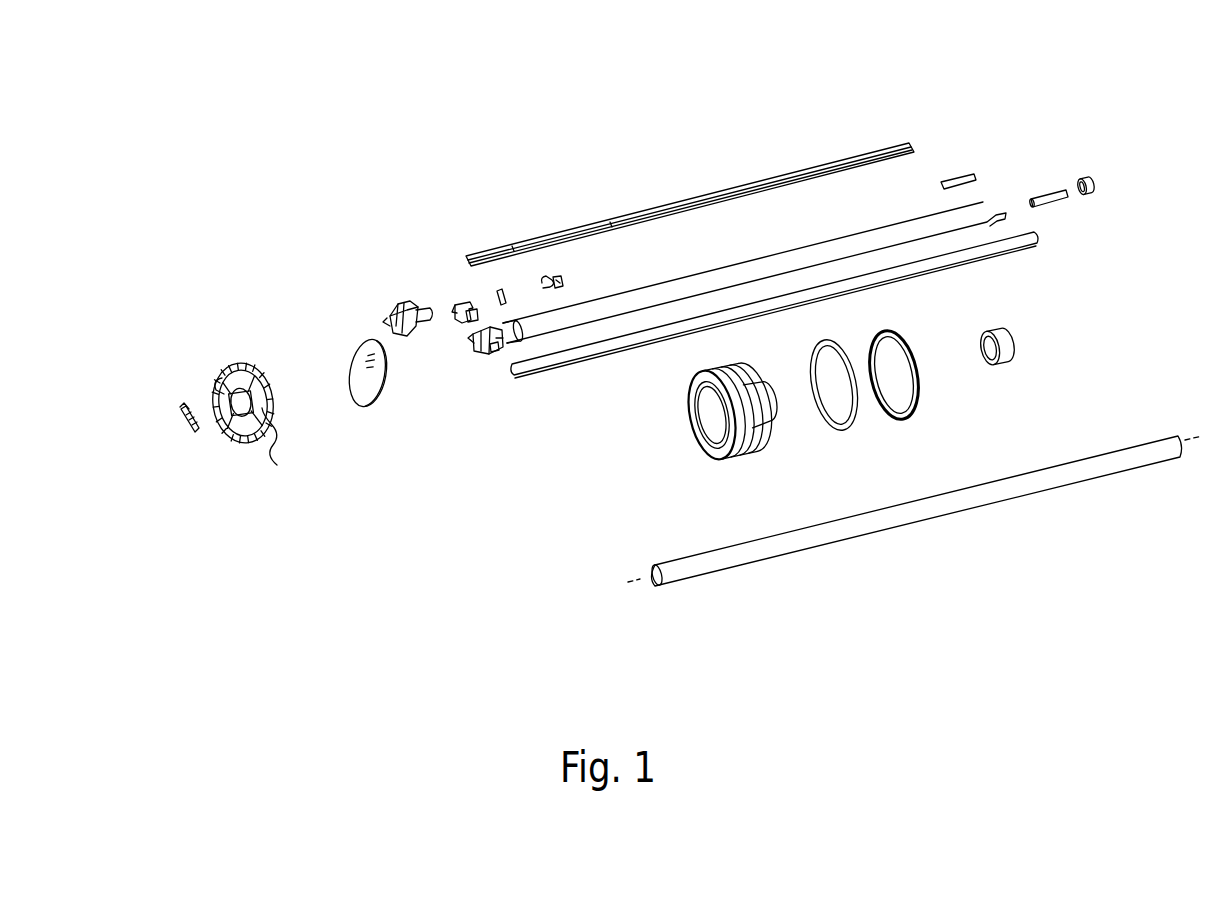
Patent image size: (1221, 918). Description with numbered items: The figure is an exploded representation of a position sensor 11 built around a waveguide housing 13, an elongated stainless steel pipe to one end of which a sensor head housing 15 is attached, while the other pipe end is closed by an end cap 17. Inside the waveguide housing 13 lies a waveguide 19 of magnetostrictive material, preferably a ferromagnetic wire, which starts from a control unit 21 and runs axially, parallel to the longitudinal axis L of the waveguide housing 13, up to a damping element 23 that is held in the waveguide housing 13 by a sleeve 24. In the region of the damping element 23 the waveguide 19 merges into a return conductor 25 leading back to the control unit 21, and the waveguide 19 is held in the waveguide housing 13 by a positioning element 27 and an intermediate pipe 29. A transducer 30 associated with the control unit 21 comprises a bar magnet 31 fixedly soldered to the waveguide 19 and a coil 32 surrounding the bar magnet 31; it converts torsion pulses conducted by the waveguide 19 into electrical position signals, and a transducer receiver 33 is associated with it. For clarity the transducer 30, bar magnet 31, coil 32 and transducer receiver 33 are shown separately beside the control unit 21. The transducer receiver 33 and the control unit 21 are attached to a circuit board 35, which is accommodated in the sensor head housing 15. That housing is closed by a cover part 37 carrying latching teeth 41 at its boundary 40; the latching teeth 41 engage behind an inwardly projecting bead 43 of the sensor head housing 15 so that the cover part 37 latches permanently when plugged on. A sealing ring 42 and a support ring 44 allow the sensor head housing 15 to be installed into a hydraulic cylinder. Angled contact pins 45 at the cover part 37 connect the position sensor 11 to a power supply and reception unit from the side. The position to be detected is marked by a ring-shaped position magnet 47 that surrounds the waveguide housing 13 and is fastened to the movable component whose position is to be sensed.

The position sensor 11 is at (525, 588).
The waveguide housing 13 is at (915, 520).
The sensor head housing 15 is at (733, 462).
The end cap 17 is at (1090, 178).
The waveguide 19 is at (607, 320).
The control unit 21 is at (480, 350).
The damping element 23 is at (950, 173).
The sleeve 24 is at (1070, 198).
The return conductor 25 is at (722, 266).
The positioning element 27 is at (722, 203).
The intermediate pipe 29 is at (795, 305).
The transducer 30 is at (462, 323).
The bar magnet 31 is at (497, 290).
The coil 32 is at (551, 277).
The transducer receiver 33 is at (404, 305).
The circuit board 35 is at (363, 393).
The cover part 37 is at (230, 432).
The boundary 40 is at (248, 443).
The latching teeth 41 is at (235, 367).
The sealing ring 42 is at (838, 352).
The bead 43 is at (696, 428).
The support ring 44 is at (890, 410).
The contact pins 45 is at (182, 430).
The position magnet 47 is at (1010, 332).
The longitudinal axis L is at (641, 579).